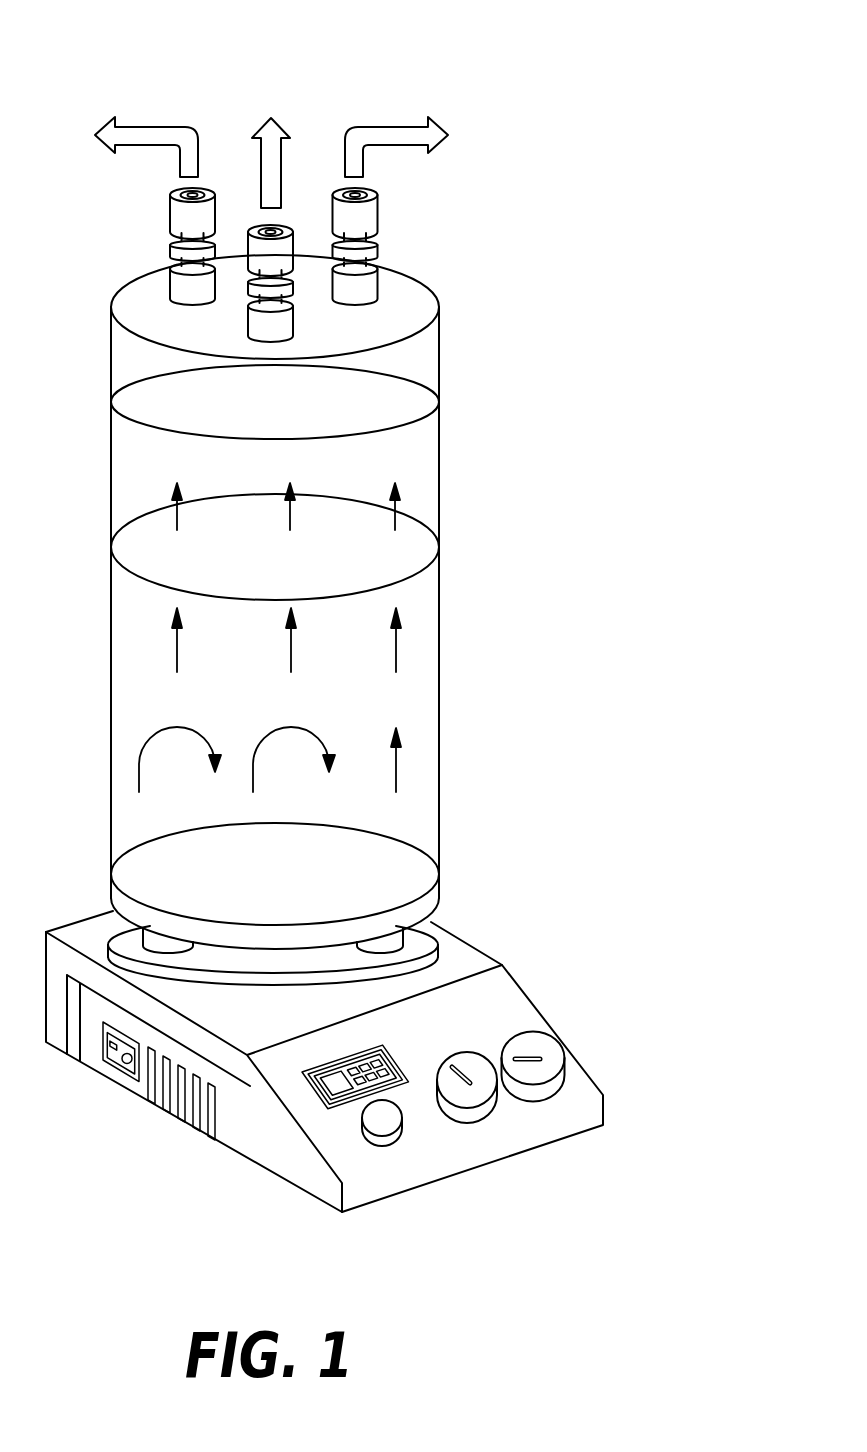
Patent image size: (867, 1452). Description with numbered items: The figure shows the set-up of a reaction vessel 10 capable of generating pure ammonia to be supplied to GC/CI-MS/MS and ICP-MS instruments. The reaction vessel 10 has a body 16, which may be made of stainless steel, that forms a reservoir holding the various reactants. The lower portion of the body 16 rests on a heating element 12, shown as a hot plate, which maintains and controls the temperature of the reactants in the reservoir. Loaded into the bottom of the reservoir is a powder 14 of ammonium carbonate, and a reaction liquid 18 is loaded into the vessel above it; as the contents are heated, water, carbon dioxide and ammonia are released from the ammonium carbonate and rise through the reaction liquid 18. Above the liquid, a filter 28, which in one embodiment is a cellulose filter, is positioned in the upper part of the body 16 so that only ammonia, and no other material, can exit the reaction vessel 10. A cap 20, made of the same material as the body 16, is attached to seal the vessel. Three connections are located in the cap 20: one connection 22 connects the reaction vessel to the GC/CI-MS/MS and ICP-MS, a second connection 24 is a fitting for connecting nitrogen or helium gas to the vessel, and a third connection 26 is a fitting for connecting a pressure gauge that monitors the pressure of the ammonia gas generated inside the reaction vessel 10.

The reaction vessel 10 is at (522, 78).
The heating element 12 is at (460, 957).
The powder 14 is at (393, 873).
The body 16 is at (440, 715).
The reaction liquid 18 is at (423, 603).
The cap 20 is at (423, 353).
The connection 22 is at (367, 222).
The second connection 24 is at (288, 228).
The third connection 26 is at (180, 217).
The filter 28 is at (135, 398).